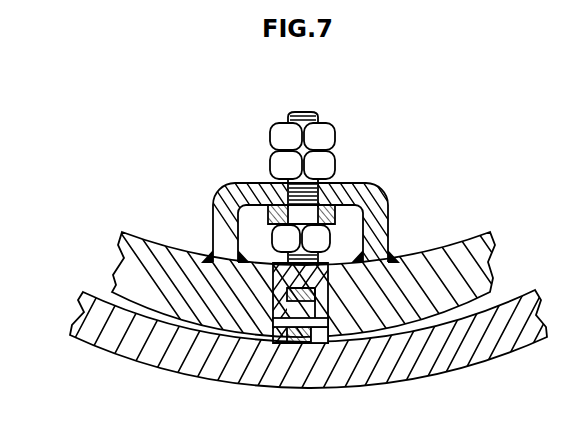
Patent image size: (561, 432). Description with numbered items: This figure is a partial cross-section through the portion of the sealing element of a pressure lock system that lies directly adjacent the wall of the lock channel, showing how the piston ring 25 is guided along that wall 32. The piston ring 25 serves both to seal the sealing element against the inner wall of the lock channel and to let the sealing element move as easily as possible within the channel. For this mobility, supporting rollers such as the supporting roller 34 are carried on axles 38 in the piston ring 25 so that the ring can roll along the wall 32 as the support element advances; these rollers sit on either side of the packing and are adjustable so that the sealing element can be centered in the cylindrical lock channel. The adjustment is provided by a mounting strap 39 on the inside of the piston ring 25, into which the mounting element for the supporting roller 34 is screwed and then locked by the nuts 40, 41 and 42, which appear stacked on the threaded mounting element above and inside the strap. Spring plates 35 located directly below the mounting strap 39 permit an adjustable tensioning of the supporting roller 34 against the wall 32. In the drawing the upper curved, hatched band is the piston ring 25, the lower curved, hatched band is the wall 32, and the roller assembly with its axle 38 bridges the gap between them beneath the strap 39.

The piston ring 25 is at (118, 257).
The wall 32 is at (443, 367).
The supporting roller 34 is at (292, 343).
The spring plate 35 is at (258, 185).
The axle 38 is at (318, 343).
The mounting strap 39 is at (216, 198).
The nut 40 is at (333, 240).
The nut 41 is at (350, 161).
The nut 42 is at (345, 144).